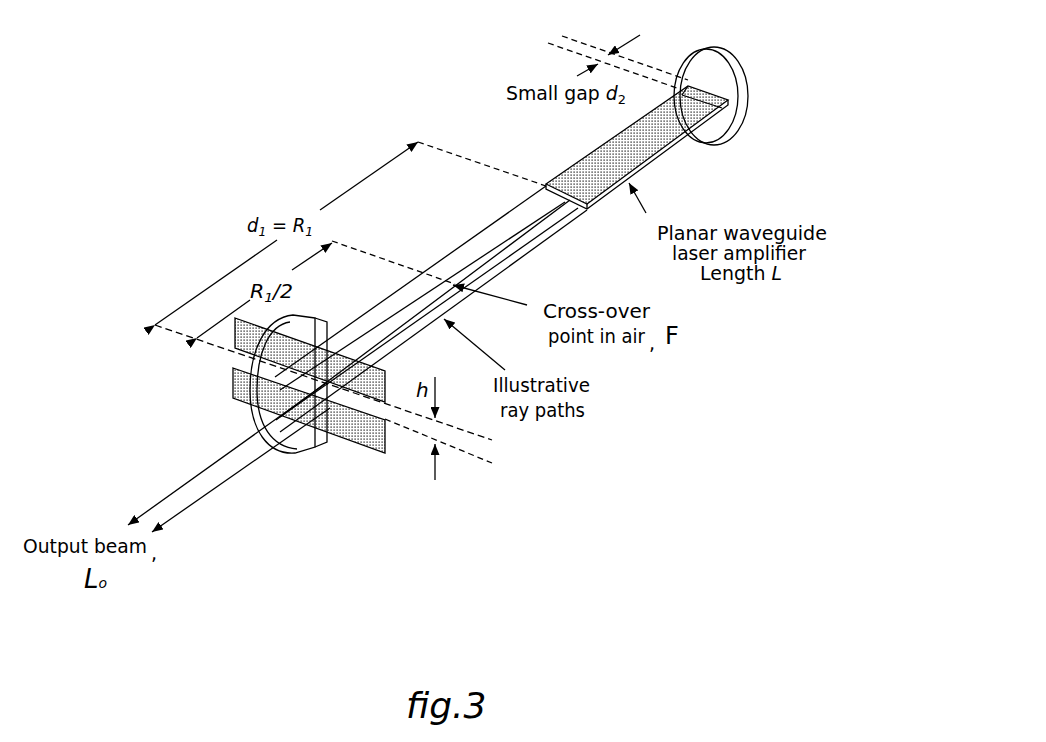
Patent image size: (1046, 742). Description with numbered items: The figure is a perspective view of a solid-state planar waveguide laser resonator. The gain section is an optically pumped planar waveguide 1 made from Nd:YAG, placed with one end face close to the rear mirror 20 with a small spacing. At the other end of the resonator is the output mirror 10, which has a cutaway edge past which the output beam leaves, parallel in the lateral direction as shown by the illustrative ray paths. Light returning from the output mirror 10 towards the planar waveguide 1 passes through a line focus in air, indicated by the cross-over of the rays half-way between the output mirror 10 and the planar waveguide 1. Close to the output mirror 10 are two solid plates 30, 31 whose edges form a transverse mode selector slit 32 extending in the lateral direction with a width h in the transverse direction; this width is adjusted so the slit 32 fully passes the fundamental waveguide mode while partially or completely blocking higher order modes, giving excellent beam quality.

The planar waveguide 1 is at (588, 156).
The output mirror 10 is at (308, 459).
The rear mirror 20 is at (744, 121).
The solid plate 30 is at (228, 378).
The solid plate 31 is at (386, 380).
The transverse mode selector slit 32 is at (225, 355).